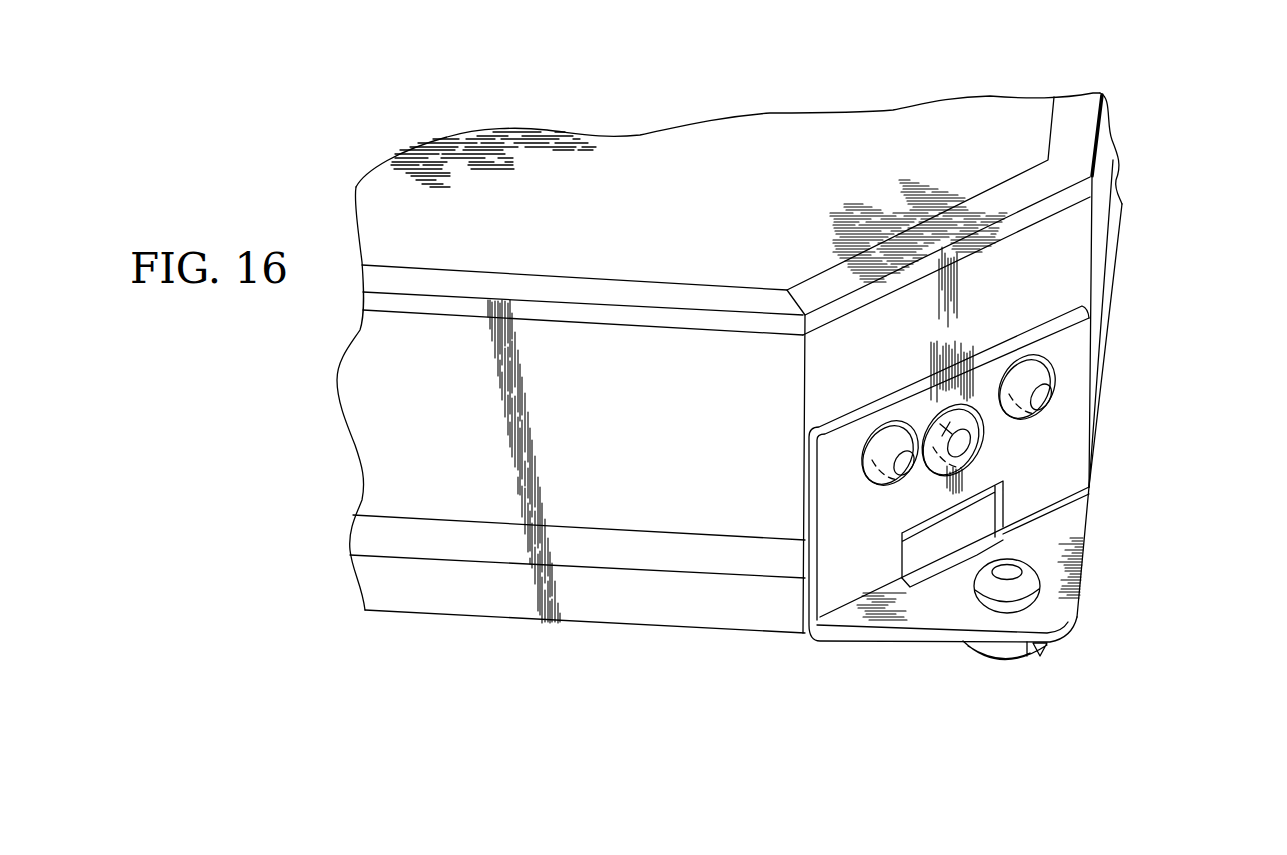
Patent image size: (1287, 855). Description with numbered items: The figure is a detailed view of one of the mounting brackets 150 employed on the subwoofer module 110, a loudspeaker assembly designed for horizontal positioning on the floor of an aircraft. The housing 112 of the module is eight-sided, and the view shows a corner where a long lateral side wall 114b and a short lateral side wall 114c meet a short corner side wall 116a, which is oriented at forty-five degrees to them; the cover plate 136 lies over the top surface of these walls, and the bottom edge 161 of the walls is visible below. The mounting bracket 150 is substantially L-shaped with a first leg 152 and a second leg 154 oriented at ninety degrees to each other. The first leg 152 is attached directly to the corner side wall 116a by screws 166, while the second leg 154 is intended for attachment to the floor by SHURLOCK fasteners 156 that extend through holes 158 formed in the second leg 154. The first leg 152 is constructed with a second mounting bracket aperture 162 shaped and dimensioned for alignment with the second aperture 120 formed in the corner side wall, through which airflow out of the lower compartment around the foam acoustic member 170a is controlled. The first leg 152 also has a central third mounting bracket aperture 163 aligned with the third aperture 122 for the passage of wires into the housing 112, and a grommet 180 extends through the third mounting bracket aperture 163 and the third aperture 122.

The subwoofer module 110 is at (483, 633).
The housing 112 is at (1100, 227).
The long lateral side wall 114b is at (650, 553).
The short lateral side wall 114c is at (1097, 288).
The short corner side wall 116a is at (1033, 303).
The second aperture 120 is at (913, 582).
The third aperture 122 is at (965, 447).
The cover plate 136 is at (828, 140).
The mounting bracket 150 is at (1060, 447).
The first leg 152 is at (995, 363).
The second leg 154 is at (1050, 623).
The SHURLOCK fastener 156 is at (998, 660).
The hole 158 is at (1077, 618).
The bottom edge 161 is at (760, 637).
The second mounting bracket aperture 162 is at (900, 547).
The third mounting bracket aperture 163 is at (943, 430).
The screw 166 is at (885, 448).
The foam acoustic member 170a is at (963, 520).
The grommet 180 is at (960, 412).